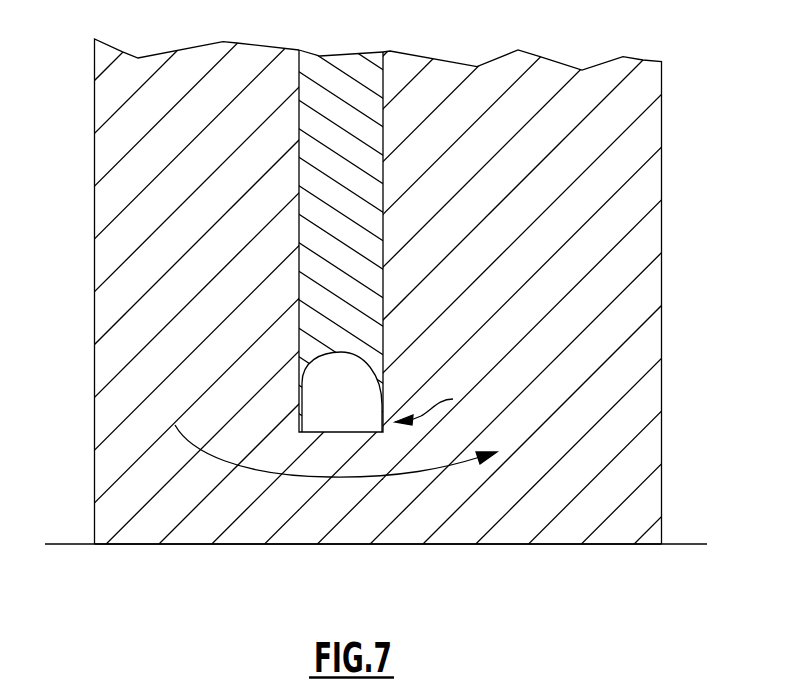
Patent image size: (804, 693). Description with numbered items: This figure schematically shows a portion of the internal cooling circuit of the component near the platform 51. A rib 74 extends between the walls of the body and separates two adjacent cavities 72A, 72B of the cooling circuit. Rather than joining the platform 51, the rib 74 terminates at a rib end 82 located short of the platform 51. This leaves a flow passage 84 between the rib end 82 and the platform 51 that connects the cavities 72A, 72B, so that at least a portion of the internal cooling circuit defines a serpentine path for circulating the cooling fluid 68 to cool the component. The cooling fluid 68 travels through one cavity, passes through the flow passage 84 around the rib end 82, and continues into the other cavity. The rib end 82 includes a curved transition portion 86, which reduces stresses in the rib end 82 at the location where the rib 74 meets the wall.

The platform 51 is at (618, 543).
The cooling fluid 68 is at (252, 468).
The cavity 72A is at (163, 258).
The cavity 72B is at (563, 258).
The rib 74 is at (350, 124).
The rib end 82 is at (440, 405).
The flow passage 84 is at (355, 525).
The curved transition portion 86 is at (327, 393).